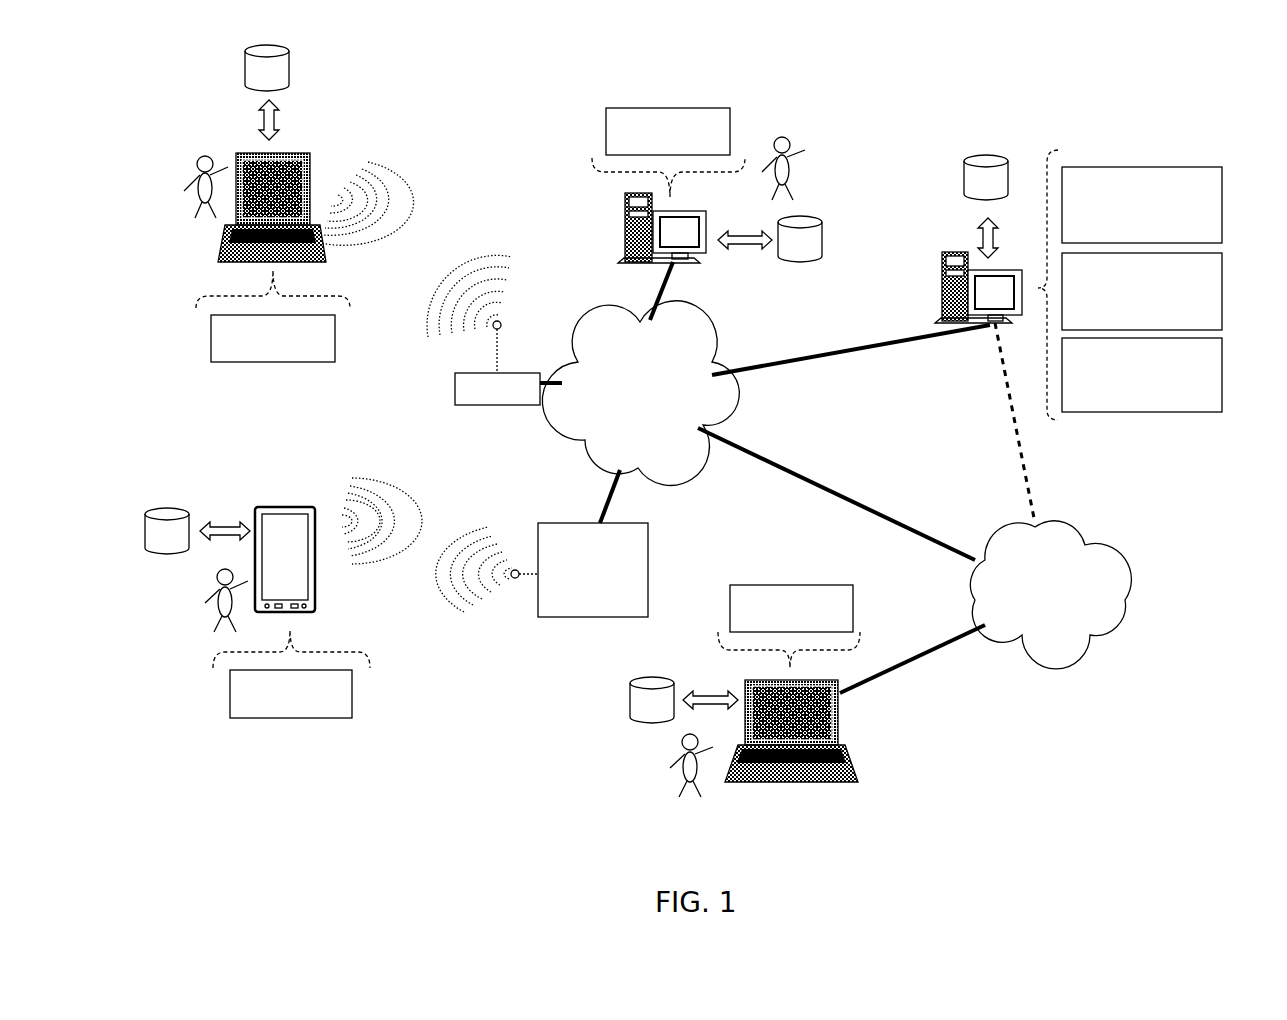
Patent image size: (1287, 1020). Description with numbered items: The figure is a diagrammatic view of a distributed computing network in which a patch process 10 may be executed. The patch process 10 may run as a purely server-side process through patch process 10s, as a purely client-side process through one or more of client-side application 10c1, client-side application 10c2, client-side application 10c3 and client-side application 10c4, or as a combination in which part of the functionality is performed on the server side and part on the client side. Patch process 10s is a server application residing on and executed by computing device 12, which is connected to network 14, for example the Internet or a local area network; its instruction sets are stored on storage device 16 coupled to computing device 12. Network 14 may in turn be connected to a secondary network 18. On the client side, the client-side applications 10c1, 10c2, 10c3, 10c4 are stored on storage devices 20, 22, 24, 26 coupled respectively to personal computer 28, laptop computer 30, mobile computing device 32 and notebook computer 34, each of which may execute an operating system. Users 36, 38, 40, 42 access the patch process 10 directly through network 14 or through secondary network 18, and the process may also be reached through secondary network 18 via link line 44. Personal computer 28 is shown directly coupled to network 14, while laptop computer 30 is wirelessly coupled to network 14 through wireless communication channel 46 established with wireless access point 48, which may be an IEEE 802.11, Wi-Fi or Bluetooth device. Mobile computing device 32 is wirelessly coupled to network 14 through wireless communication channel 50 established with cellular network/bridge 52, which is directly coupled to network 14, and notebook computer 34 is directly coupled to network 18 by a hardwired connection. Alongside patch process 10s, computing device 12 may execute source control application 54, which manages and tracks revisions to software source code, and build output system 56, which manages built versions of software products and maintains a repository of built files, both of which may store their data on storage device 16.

The patch process 10 is at (1086, 114).
The server-side patch process 10s is at (1222, 205).
The client-side application 10c1 is at (730, 135).
The client-side application 10c2 is at (335, 340).
The client-side application 10c3 is at (352, 697).
The client-side application 10c4 is at (853, 600).
The computing device 12 is at (942, 268).
The network 14 is at (640, 393).
The storage device 16 is at (986, 177).
The secondary network 18 is at (1050, 595).
The storage device 20 is at (800, 239).
The storage device 22 is at (267, 68).
The storage device 24 is at (167, 531).
The storage device 26 is at (652, 700).
The personal computer 28 is at (706, 228).
The laptop computer 30 is at (310, 176).
The mobile computing device 32 is at (318, 556).
The notebook computer 34 is at (838, 722).
The user 36 is at (798, 150).
The user 38 is at (172, 182).
The user 40 is at (205, 582).
The user 42 is at (658, 760).
The link line 44 is at (440, 223).
The wireless communication channel 46 is at (433, 524).
The wireless access point 48 is at (448, 383).
The wireless communication channel 50 is at (648, 538).
The cellular network/bridge 52 is at (990, 427).
The source control application 54 is at (1222, 290).
The build output system 56 is at (1222, 375).